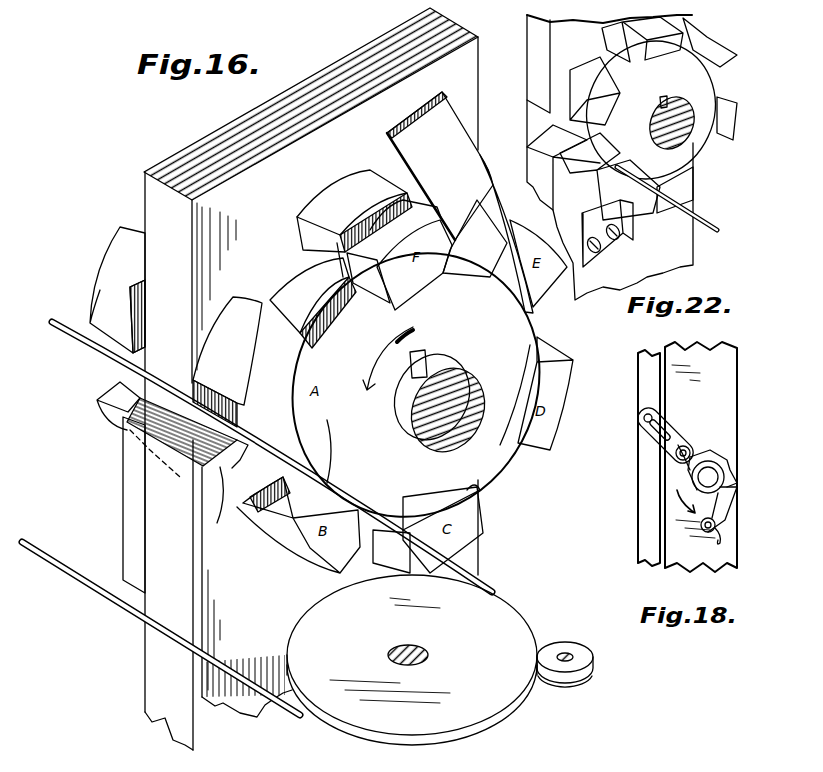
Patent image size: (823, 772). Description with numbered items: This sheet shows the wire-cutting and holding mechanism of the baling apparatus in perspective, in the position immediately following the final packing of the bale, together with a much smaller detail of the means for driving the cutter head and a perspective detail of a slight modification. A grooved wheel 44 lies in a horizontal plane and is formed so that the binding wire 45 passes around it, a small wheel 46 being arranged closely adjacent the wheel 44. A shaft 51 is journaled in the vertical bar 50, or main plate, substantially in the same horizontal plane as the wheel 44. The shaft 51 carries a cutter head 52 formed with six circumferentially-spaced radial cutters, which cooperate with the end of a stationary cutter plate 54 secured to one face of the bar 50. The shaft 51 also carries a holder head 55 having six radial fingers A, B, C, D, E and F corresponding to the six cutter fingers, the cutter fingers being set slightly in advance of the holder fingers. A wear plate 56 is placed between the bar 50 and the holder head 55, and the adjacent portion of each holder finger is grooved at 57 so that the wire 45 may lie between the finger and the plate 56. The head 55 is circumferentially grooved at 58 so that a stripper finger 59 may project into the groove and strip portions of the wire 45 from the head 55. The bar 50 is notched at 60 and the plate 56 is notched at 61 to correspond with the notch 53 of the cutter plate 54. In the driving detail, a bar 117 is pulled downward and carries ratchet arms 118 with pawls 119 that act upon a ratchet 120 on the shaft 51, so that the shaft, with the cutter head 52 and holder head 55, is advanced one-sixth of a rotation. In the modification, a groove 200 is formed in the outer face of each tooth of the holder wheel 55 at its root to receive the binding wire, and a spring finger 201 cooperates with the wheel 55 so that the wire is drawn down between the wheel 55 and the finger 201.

In FIG. 16, the grooved wheel 44 is at (412, 660).
In FIG. 16, the binding wire 45 is at (100, 345).
In FIG. 22, the binding wire 45 is at (713, 223).
In FIG. 16, the small wheel 46 is at (575, 683).
In FIG. 16, the vertical bar 50 is at (167, 713).
In FIG. 22, the vertical bar 50 is at (693, 255).
In FIG. 16, the shaft 51 is at (463, 430).
In FIG. 22, the shaft 51 is at (683, 138).
In FIG. 18, the shaft 51 is at (697, 482).
In FIG. 16, the cutter head 52 is at (100, 290).
In FIG. 16, the notch of cutter plate 53 is at (140, 418).
In FIG. 16, the stationary cutter plate 54 is at (125, 495).
In FIG. 16, the holder head 55 is at (562, 417).
In FIG. 22, the holder head 55 is at (695, 187).
In FIG. 16, the wear plate 56 is at (123, 687).
In FIG. 16, the groove of holder finger 57 is at (223, 510).
In FIG. 16, the circumferential groove 58 is at (330, 290).
In FIG. 16, the stripper finger 59 is at (475, 173).
In FIG. 16, the notch of bar 60 is at (173, 417).
In FIG. 16, the notch of wear plate 61 is at (213, 465).
In FIG. 18, the bar 117 is at (643, 527).
In FIG. 18, the ratchet arms 118 is at (672, 427).
In FIG. 18, the pawls 119 is at (687, 452).
In FIG. 18, the ratchet 120 is at (693, 497).
In FIG. 22, the groove 200 is at (663, 67).
In FIG. 22, the spring finger 201 is at (633, 207).